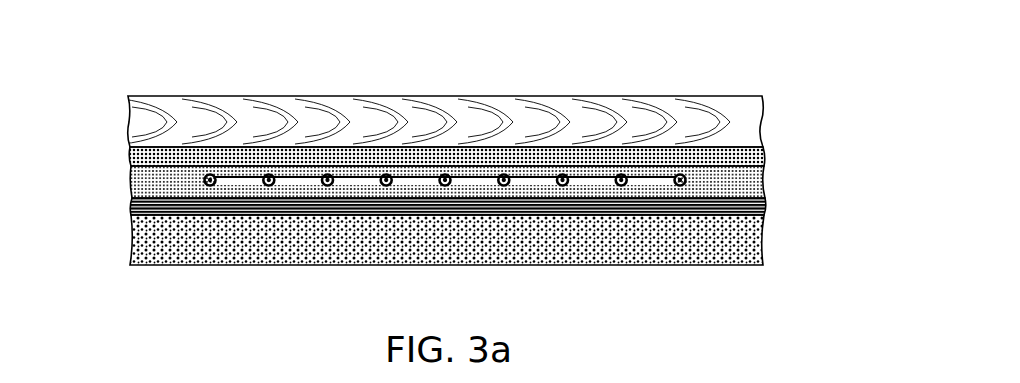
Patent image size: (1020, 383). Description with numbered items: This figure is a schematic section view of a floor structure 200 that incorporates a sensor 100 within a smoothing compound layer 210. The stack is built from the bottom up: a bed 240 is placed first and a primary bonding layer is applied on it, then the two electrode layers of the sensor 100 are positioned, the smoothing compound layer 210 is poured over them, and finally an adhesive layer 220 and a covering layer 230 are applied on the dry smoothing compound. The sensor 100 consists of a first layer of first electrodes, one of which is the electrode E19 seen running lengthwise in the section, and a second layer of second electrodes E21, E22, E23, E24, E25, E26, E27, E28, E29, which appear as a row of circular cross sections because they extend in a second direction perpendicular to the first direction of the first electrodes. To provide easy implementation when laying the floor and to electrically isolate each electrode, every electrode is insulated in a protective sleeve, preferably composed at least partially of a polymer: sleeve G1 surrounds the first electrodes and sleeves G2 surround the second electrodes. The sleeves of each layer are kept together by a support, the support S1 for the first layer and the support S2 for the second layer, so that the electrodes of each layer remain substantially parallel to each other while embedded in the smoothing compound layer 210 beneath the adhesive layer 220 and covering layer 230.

The floor structure 200 is at (108, 83).
The sensor 100 is at (110, 175).
The covering layer 230 is at (758, 112).
The adhesive layer 220 is at (756, 153).
The smoothing compound layer 210 is at (752, 187).
The first electrode E19 is at (757, 217).
The bed 240 is at (750, 248).
The second electrode E21 is at (207, 176).
The second electrode E22 is at (266, 176).
The second electrode E23 is at (324, 176).
The second electrode E24 is at (383, 176).
The second electrode E25 is at (442, 176).
The second electrode E26 is at (501, 176).
The second electrode E27 is at (560, 176).
The second electrode E28 is at (618, 176).
The second electrode E29 is at (677, 176).
The protective sleeve G2 is at (207, 185).
The protective sleeve G1 is at (718, 216).
The support S1 is at (227, 216).
The support S2 is at (352, 186).